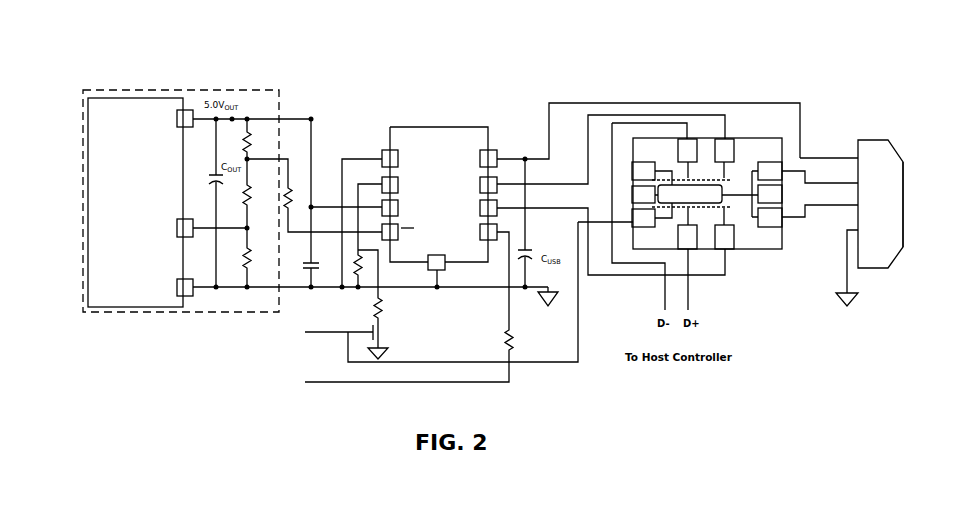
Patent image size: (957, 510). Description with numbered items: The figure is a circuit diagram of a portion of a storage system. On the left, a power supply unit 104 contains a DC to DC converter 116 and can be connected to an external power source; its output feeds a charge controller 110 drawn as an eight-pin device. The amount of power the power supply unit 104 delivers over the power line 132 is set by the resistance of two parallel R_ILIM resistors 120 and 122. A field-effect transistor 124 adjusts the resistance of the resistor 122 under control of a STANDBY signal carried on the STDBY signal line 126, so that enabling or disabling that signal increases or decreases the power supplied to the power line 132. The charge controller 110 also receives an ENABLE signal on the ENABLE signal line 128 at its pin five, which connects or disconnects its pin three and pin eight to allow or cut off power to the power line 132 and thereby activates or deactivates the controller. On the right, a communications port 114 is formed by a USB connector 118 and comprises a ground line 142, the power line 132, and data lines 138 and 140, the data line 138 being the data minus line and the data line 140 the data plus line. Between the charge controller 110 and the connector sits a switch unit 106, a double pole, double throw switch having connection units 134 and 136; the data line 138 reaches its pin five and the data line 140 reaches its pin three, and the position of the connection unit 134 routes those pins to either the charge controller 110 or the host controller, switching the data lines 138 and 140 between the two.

The power supply unit 104 is at (176, 90).
The DC to DC converter 116 is at (126, 312).
The charge controller 110 is at (412, 127).
The resistor 120 is at (336, 291).
The resistor 122 is at (373, 306).
The field-effect transistor 124 is at (382, 333).
The STDBY signal line 126 is at (319, 334).
The ENABLE signal line 128 is at (321, 385).
The power line 132 is at (607, 103).
The connection unit 134 is at (714, 176).
The switch unit 106 is at (760, 138).
The connection unit 136 is at (713, 210).
The data line 138 is at (801, 126).
The data line 140 is at (790, 222).
The ground line 142 is at (845, 278).
The communications port 114 is at (869, 139).
The USB connector 118 is at (904, 206).